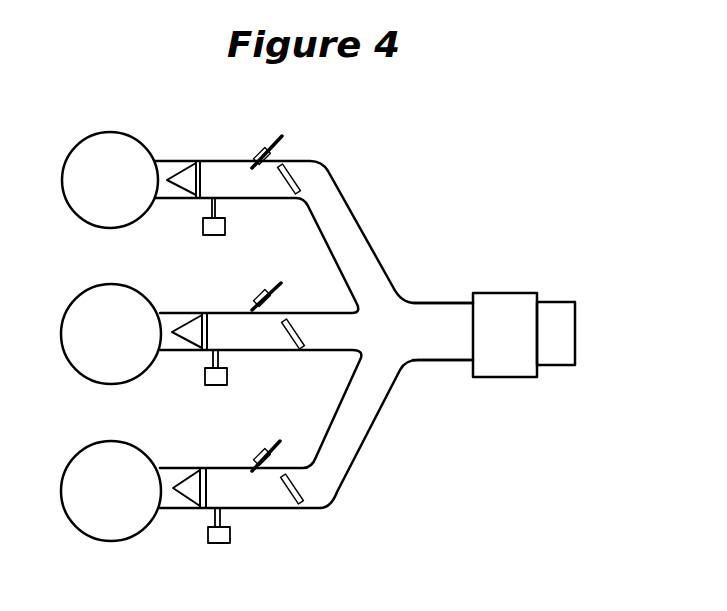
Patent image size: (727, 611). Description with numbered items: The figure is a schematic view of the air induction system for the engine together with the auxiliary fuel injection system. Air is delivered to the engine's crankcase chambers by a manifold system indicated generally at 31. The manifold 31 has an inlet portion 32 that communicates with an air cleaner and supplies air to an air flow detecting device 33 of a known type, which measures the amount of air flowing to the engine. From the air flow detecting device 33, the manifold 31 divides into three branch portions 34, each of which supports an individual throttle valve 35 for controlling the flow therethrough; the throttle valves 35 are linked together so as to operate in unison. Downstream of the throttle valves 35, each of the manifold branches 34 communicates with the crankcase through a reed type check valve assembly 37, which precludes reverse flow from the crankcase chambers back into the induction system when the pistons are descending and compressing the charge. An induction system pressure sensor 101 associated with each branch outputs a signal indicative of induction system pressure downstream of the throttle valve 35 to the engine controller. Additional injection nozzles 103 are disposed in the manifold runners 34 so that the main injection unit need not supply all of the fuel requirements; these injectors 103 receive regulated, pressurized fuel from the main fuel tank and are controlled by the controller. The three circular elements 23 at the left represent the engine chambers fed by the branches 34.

The fluid reservoir tank 23 is at (65, 187).
The manifold 31 is at (433, 300).
The inlet portion 32 is at (553, 302).
The air flow detecting device 33 is at (510, 378).
The branch portions 34 is at (235, 161).
The throttle valves 35 is at (298, 190).
The reed type check valve assembly 37 is at (178, 188).
The induction system pressure sensor 101 is at (214, 236).
The injection nozzles 103 is at (282, 134).